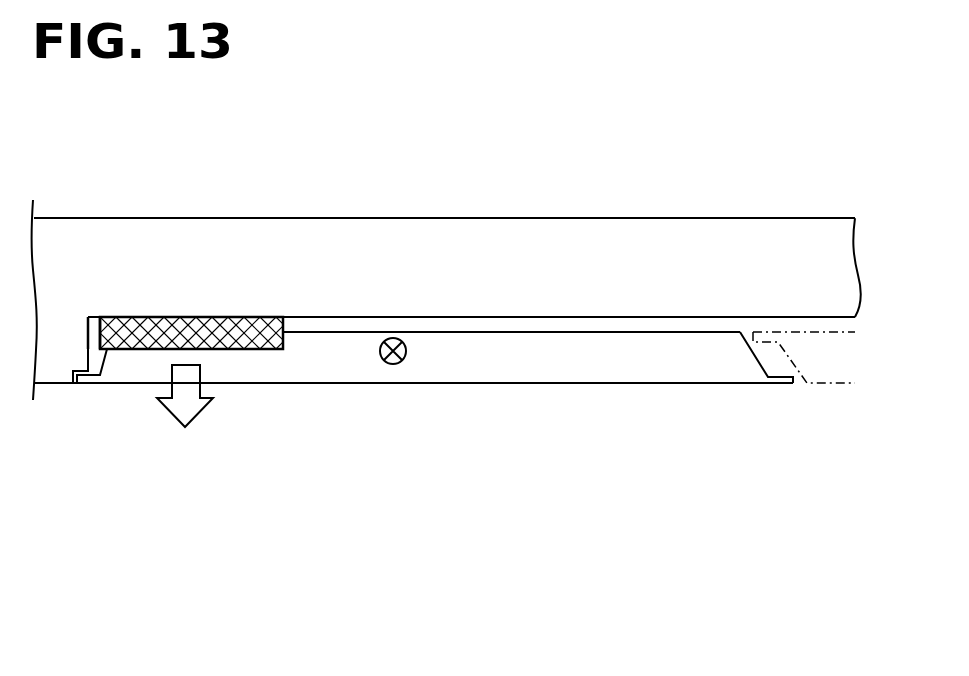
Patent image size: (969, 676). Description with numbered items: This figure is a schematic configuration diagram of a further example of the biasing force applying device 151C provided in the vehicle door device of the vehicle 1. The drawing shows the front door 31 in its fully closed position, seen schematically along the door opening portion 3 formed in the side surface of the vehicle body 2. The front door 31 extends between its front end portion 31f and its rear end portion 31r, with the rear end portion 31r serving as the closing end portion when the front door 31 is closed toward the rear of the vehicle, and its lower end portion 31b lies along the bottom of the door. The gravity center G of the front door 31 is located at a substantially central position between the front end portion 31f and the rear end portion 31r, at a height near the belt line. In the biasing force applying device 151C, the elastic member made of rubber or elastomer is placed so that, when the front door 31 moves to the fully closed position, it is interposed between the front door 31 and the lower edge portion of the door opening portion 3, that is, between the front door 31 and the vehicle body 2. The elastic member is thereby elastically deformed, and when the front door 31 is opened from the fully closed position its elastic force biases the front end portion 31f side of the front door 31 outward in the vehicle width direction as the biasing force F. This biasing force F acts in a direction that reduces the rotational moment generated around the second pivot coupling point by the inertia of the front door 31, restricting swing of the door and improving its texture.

The vehicle 1 is at (80, 581).
The vehicle body 2 is at (465, 232).
The door opening portion 3 is at (93, 345).
The biasing force applying device 151C is at (255, 349).
The front door 31 is at (525, 383).
The lower end portion 31b is at (450, 383).
The front end portion 31f is at (90, 383).
The rear end portion 31r is at (760, 383).
The gravity center G is at (395, 364).
The biasing force F is at (197, 415).